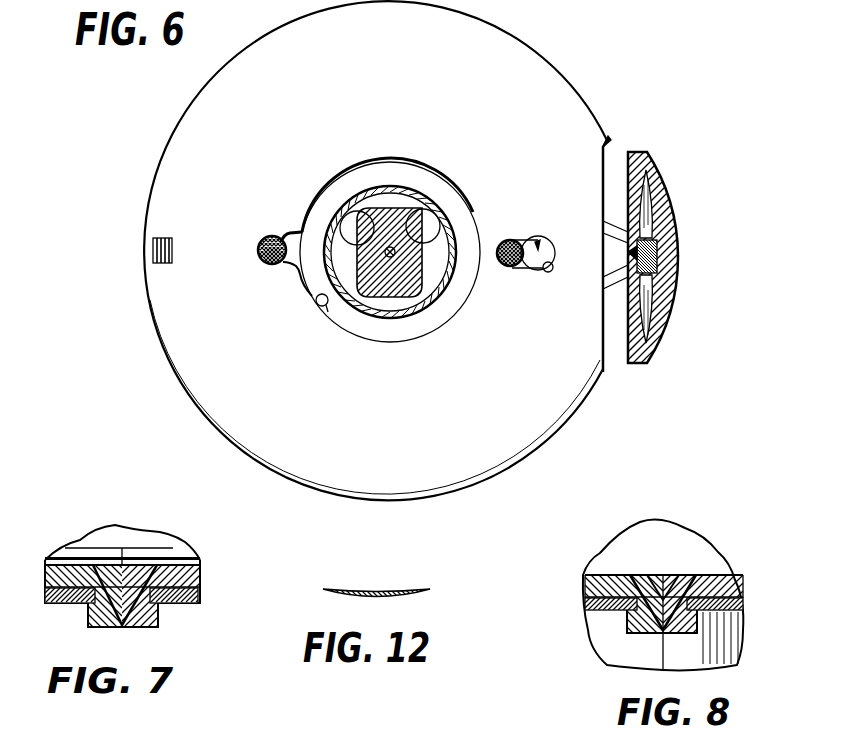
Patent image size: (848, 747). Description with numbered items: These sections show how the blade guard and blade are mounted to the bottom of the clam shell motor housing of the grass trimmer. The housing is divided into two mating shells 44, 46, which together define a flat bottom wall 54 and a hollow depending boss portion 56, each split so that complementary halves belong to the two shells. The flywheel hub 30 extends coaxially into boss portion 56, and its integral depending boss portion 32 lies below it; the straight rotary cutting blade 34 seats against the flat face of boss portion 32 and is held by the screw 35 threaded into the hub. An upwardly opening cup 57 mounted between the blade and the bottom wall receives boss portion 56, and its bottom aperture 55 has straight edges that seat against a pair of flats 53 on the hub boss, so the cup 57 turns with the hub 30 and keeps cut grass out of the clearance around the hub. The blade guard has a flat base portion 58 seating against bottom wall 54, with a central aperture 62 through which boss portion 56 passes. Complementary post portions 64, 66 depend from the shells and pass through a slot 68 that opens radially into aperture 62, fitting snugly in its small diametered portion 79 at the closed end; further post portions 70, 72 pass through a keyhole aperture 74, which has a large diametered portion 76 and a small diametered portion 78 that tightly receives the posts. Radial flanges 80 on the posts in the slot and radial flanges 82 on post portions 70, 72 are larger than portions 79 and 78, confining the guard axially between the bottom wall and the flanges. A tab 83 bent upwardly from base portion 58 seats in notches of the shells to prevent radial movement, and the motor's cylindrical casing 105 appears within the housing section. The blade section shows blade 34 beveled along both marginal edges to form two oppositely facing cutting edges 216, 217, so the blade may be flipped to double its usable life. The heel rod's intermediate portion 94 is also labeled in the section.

In FIG. 6, the flywheel hub 30 is at (383, 205).
In FIG. 6, the depending boss portion 32 is at (410, 215).
In FIG. 12, the rotary cutting blade 34 is at (380, 592).
In FIG. 6, the screw 35 is at (390, 257).
In FIG. 6, the shell 44 is at (672, 222).
In FIG. 7, the shell 44 is at (180, 541).
In FIG. 8, the shell 44 is at (710, 577).
In FIG. 6, the shell 46 is at (672, 306).
In FIG. 7, the shell 46 is at (100, 528).
In FIG. 8, the shell 46 is at (592, 560).
In FIG. 6, the flats 53 is at (350, 222).
In FIG. 7, the bottom wall 54 is at (103, 566).
In FIG. 6, the aperture 55 is at (372, 212).
In FIG. 8, the hollow depending boss portion 56 is at (738, 655).
In FIG. 6, the upwardly opening cup 57 is at (435, 310).
In FIG. 6, the base portion 58 is at (325, 110).
In FIG. 8, the base portion 58 is at (730, 595).
In FIG. 6, the central aperture 62 is at (320, 306).
In FIG. 6, the post portion 64 is at (268, 237).
In FIG. 7, the post portion 64 is at (187, 603).
In FIG. 6, the post portion 66 is at (272, 264).
In FIG. 7, the post portion 66 is at (70, 600).
In FIG. 6, the slot 68 is at (297, 268).
In FIG. 7, the slot 68 is at (145, 587).
In FIG. 6, the post portion 70 is at (512, 240).
In FIG. 8, the post portion 70 is at (697, 577).
In FIG. 6, the post portion 72 is at (507, 268).
In FIG. 8, the post portion 72 is at (618, 610).
In FIG. 6, the aperture 74 is at (537, 243).
In FIG. 8, the aperture 74 is at (641, 575).
In FIG. 6, the large diametered portion 76 is at (549, 271).
In FIG. 6, the small diametered portion 78 is at (497, 262).
In FIG. 6, the small diametered portion 79 is at (258, 249).
In FIG. 7, the radial flanges 80 is at (88, 621).
In FIG. 8, the radial flanges 82 is at (698, 630).
In FIG. 6, the tab 83 is at (172, 256).
In FIG. 6, the intermediate portion 94 is at (660, 262).
In FIG. 8, the cylindrical casing 105 is at (713, 541).
In FIG. 12, the cutting edge 216 is at (430, 589).
In FIG. 12, the cutting edge 217 is at (323, 589).